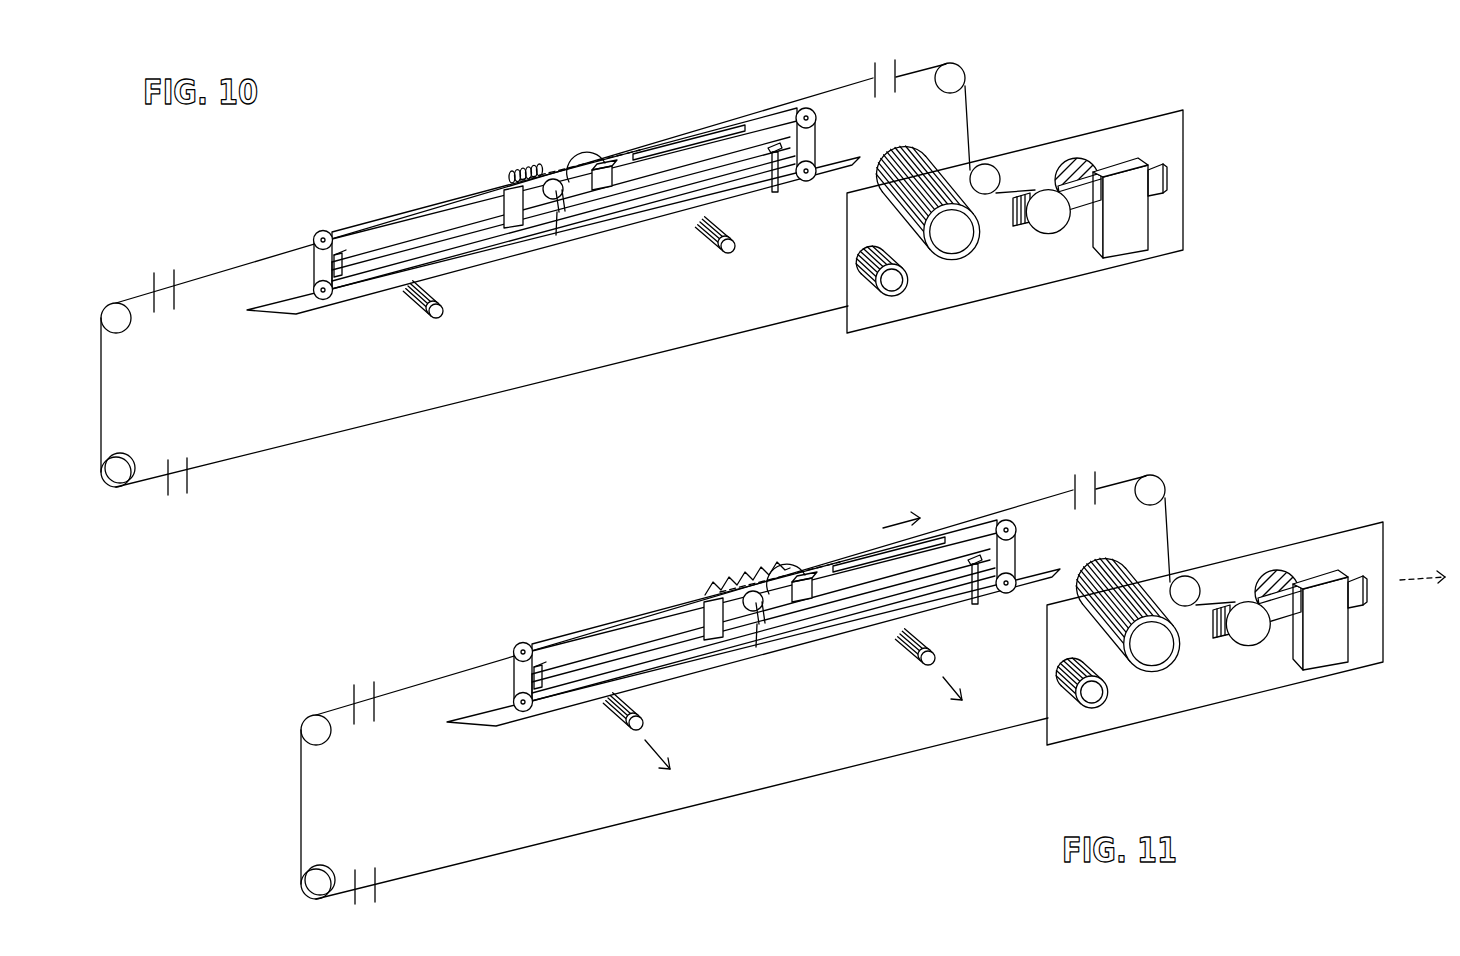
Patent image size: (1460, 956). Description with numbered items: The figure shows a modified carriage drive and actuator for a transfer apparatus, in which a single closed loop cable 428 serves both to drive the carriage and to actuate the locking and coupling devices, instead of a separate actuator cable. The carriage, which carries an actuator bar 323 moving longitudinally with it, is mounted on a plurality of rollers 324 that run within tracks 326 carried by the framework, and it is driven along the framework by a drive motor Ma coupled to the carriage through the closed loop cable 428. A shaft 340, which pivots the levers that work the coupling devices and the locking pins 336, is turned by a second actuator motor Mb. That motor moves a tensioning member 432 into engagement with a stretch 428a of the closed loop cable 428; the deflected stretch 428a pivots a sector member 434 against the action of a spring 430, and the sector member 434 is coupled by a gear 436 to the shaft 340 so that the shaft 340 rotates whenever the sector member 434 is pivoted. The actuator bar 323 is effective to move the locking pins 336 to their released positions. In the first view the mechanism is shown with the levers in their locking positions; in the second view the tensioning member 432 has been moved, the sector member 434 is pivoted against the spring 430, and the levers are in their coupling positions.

In FIG. 10, the actuator bar 323 is at (620, 228).
In FIG. 11, the actuator bar 323 is at (753, 647).
In FIG. 10, the rollers 324 is at (805, 108).
In FIG. 11, the rollers 324 is at (738, 629).
In FIG. 10, the tracks 326 is at (424, 318).
In FIG. 11, the tracks 326 is at (611, 744).
In FIG. 11, the locking pins 336 is at (962, 665).
In FIG. 10, the shaft 340 is at (473, 232).
In FIG. 11, the shaft 340 is at (763, 638).
In FIG. 10, the closed loop cable 428 is at (208, 272).
In FIG. 11, the closed loop cable 428 is at (723, 688).
In FIG. 10, the stretch of the closed-loop cable 428a is at (922, 68).
In FIG. 11, the stretch of the closed-loop cable 428a is at (1178, 513).
In FIG. 10, the spring 430 is at (534, 168).
In FIG. 11, the spring 430 is at (745, 555).
In FIG. 10, the tensioning member 432 is at (1056, 218).
In FIG. 11, the tensioning member 432 is at (1274, 654).
In FIG. 10, the sector member 434 is at (568, 176).
In FIG. 11, the sector member 434 is at (787, 568).
In FIG. 10, the gear 436 is at (612, 166).
In FIG. 11, the gear 436 is at (838, 541).
In FIG. 10, the drive motor Ma is at (955, 242).
In FIG. 11, the drive motor Ma is at (1133, 666).
In FIG. 10, the actuator motor Mb is at (1096, 170).
In FIG. 11, the actuator motor Mb is at (1330, 576).